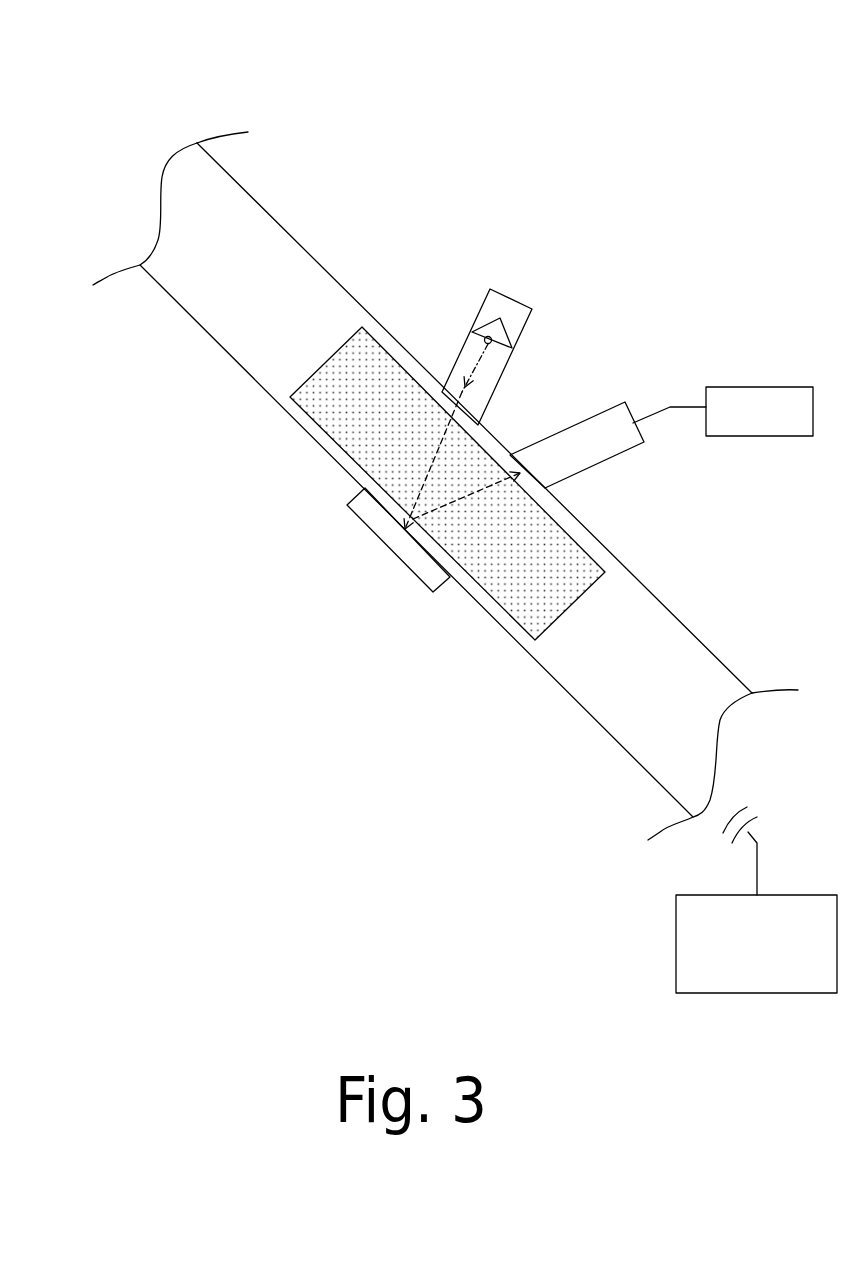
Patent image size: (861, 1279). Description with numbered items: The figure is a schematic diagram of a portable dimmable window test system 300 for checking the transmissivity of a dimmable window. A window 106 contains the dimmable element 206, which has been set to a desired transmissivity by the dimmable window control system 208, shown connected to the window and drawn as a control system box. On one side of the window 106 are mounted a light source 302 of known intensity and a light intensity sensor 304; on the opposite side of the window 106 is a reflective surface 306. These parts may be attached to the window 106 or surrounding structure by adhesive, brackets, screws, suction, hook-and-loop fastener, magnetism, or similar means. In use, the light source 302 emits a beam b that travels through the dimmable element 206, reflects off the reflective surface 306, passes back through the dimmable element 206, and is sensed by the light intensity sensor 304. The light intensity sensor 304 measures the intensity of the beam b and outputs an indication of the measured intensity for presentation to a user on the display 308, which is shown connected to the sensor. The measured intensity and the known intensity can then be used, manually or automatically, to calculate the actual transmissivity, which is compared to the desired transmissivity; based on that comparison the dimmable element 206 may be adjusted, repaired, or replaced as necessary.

The dimmable window test system 300 is at (103, 94).
The window 106 is at (208, 335).
The dimmable element 206 is at (310, 378).
The light source 302 is at (478, 303).
The light intensity sensor 304 is at (593, 410).
The reflective surface 306 is at (393, 555).
The display 308 is at (762, 387).
The dimmable window control system 208 is at (676, 945).
The beam b is at (453, 377).